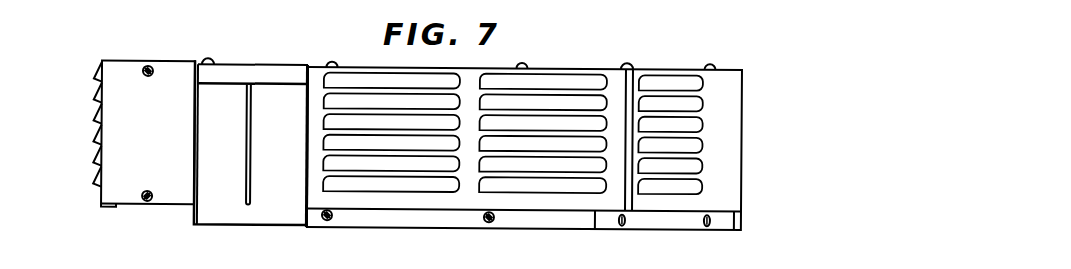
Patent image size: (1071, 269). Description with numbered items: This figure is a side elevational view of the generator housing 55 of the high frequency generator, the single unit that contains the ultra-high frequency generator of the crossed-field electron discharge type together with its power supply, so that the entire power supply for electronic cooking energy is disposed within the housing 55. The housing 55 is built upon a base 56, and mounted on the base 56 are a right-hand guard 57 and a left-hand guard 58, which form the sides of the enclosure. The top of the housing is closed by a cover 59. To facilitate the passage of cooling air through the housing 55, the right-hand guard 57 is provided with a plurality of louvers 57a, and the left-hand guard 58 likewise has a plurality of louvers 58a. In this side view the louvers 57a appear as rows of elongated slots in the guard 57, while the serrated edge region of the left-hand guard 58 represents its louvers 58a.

The generator housing 55 is at (550, 130).
The base 56 is at (225, 128).
The right-hand guard 57 is at (636, 75).
The louvers 57a is at (413, 185).
The left-hand guard 58 is at (109, 114).
The louvers 58a is at (63, 119).
The cover 59 is at (250, 70).